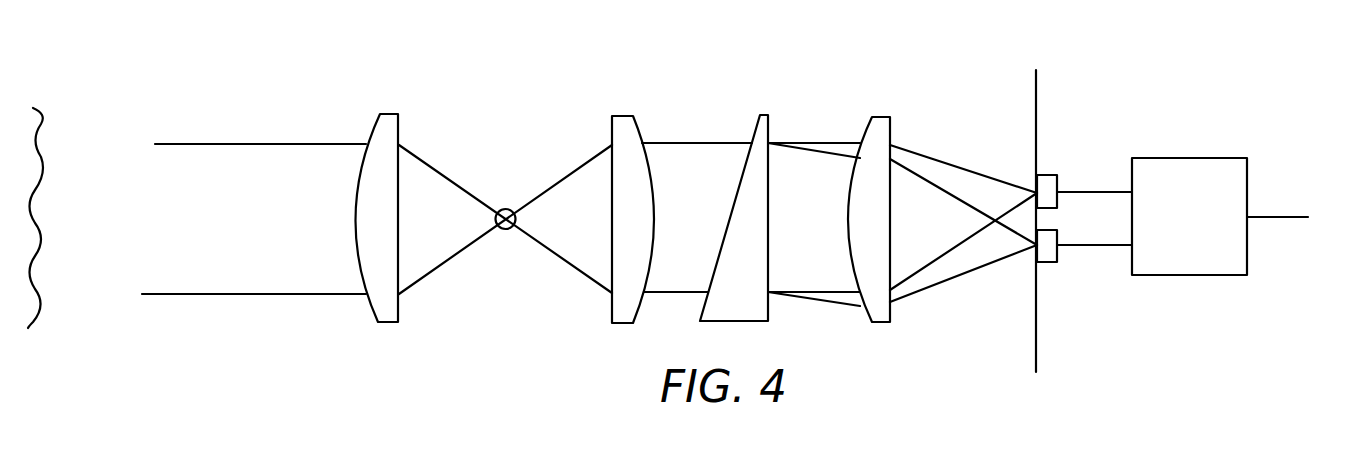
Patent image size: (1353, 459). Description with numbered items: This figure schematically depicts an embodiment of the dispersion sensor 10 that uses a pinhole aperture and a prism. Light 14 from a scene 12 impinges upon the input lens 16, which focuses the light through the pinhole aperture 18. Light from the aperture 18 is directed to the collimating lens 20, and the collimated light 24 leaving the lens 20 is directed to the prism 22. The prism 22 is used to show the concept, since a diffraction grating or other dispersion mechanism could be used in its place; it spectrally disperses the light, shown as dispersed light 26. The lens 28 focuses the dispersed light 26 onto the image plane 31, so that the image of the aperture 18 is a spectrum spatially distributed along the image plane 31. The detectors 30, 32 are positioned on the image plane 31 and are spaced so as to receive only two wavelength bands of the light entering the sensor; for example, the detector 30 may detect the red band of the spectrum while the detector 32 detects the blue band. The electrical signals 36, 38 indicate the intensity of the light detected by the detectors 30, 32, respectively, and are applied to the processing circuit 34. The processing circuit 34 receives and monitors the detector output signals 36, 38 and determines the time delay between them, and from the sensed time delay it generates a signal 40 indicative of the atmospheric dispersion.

The dispersion sensor 10 is at (511, 82).
The scene 12 is at (35, 88).
The light 14 is at (256, 113).
The input lens 16 is at (387, 112).
The pinhole aperture 18 is at (504, 207).
The collimating lens 20 is at (615, 114).
The prism 22 is at (772, 128).
The collimated light 24 is at (685, 140).
The dispersed light 26 is at (828, 140).
The lens 28 is at (893, 128).
The detector 30 is at (1048, 175).
The image plane 31 is at (1037, 105).
The detector 32 is at (1043, 263).
The processing circuit 34 is at (1203, 158).
The electrical signal 36 is at (1090, 190).
The electrical signal 38 is at (1100, 247).
The signal indicative of atmospheric dispersion 40 is at (1270, 217).